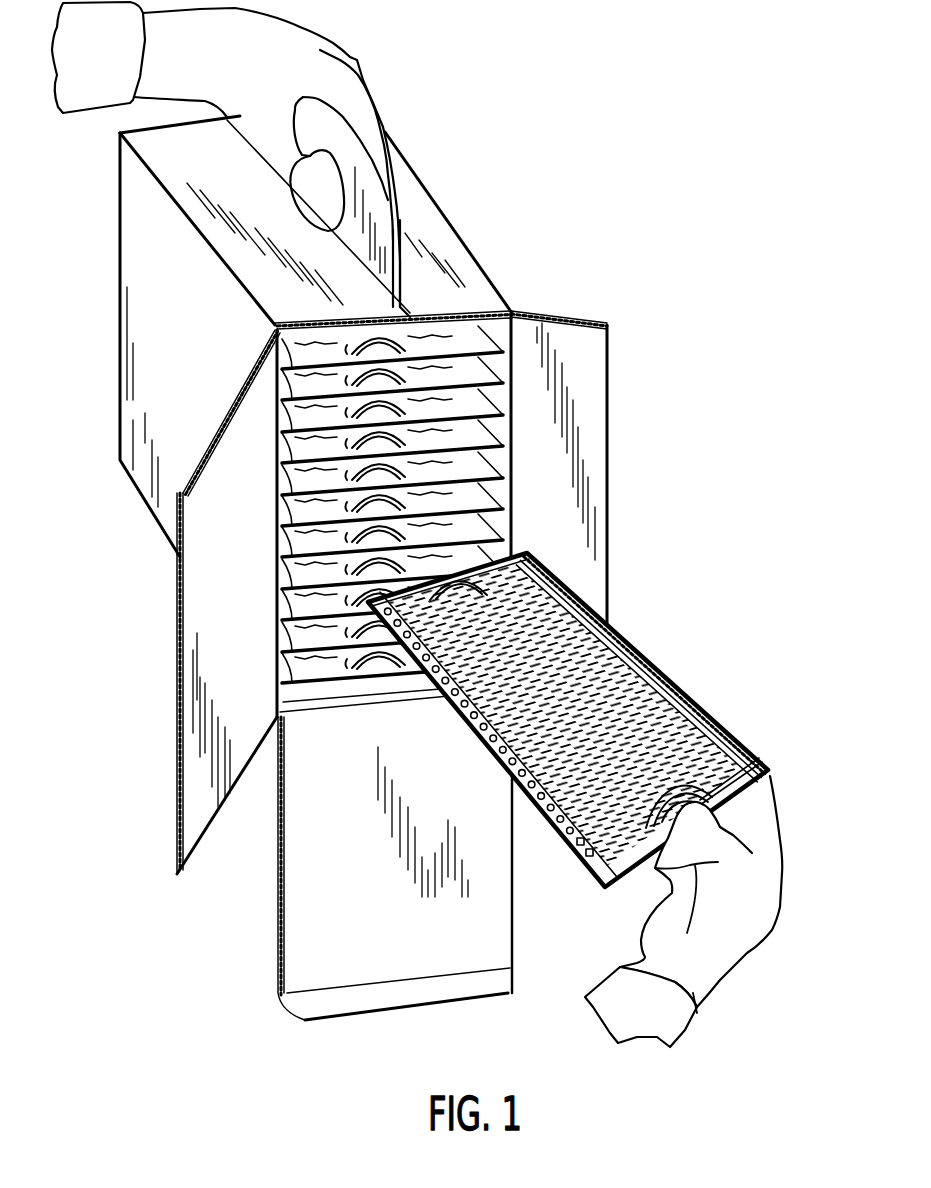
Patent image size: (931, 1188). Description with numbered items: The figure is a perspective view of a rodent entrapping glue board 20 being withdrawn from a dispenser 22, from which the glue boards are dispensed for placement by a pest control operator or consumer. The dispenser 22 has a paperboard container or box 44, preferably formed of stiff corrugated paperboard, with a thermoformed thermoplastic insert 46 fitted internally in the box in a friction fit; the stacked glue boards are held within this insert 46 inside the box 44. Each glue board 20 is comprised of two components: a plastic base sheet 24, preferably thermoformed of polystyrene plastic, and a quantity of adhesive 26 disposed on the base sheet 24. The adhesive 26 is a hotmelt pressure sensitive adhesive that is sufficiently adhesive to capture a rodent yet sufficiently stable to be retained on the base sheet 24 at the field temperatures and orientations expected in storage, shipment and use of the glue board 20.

The dispenser 22 is at (490, 210).
The box 44 is at (157, 368).
The thermoformed thermoplastic insert 46 is at (502, 493).
The glue board 20 is at (672, 638).
The adhesive 26 is at (565, 620).
The plastic base sheet 24 is at (769, 772).